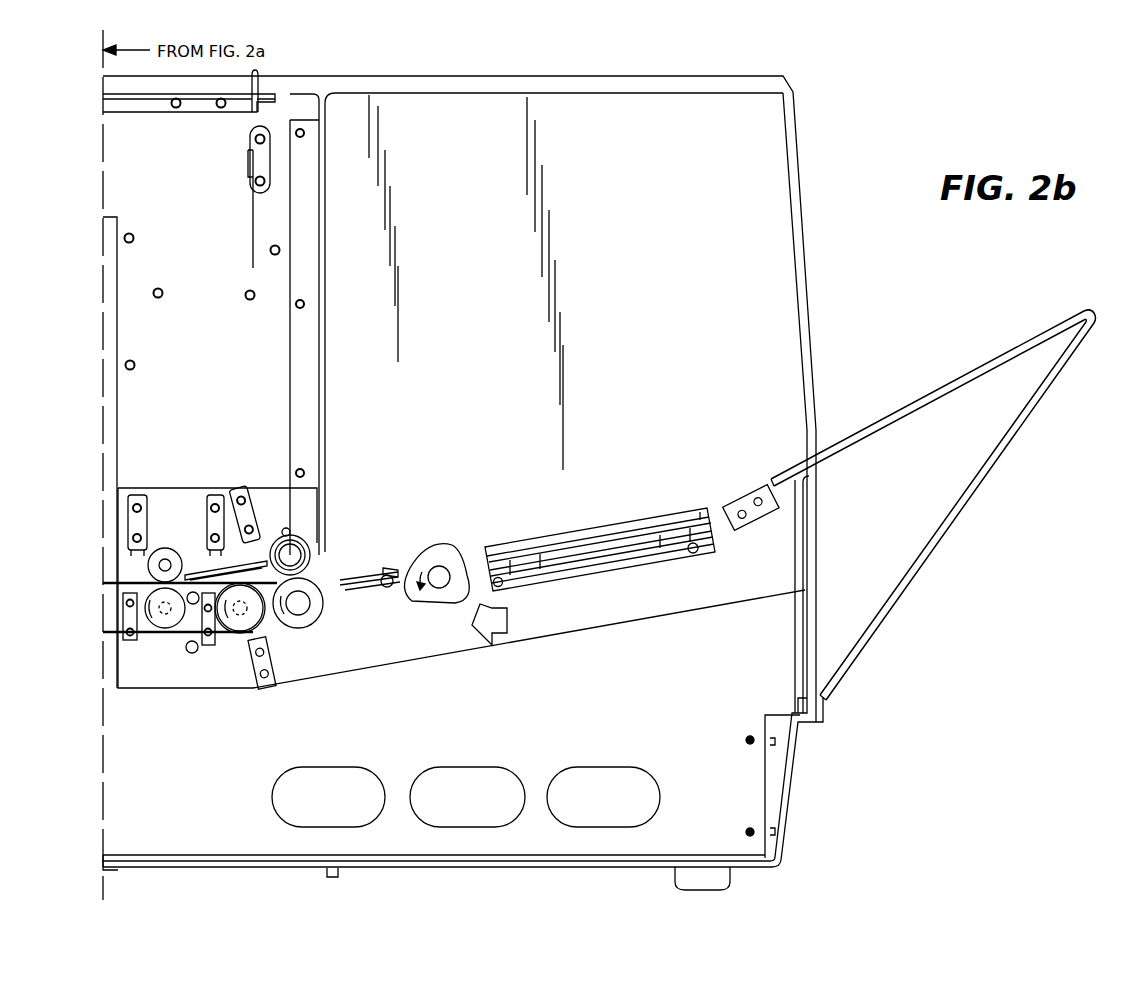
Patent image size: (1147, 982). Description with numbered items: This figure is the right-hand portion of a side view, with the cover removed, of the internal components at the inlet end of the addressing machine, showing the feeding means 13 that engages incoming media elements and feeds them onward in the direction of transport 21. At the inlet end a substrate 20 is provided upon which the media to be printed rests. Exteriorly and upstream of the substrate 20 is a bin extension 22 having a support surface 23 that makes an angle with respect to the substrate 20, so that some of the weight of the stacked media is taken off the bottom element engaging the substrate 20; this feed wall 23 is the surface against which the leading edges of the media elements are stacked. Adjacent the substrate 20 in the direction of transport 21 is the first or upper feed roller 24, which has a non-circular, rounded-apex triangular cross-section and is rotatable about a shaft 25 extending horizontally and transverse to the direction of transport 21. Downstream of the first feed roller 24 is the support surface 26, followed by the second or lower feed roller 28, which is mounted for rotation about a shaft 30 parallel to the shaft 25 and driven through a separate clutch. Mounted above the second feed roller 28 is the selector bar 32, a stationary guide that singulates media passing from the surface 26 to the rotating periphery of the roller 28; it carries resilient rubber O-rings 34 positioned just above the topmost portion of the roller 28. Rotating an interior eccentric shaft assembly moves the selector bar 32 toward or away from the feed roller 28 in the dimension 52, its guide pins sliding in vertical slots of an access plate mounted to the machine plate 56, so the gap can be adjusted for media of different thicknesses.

The feeding means 13 is at (438, 427).
The substrate 20 is at (560, 533).
The direction of transport 21 is at (498, 632).
The bin extension 22 is at (1060, 418).
The support surface / feed wall 23 is at (323, 380).
The first feed roller 24 is at (444, 611).
The shaft 25 is at (439, 586).
The support surface 26 is at (383, 568).
The second feed roller 28 is at (324, 612).
The shaft 30 is at (305, 612).
The selector bar 32 is at (322, 553).
The O-rings 34 is at (311, 546).
The dimension 52 is at (286, 521).
The machine plate 56 is at (193, 495).